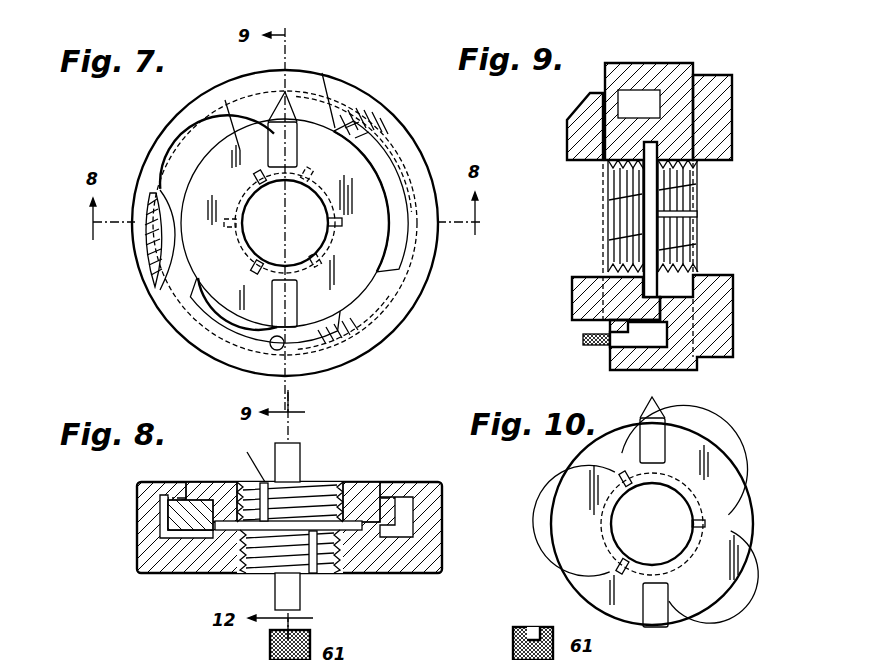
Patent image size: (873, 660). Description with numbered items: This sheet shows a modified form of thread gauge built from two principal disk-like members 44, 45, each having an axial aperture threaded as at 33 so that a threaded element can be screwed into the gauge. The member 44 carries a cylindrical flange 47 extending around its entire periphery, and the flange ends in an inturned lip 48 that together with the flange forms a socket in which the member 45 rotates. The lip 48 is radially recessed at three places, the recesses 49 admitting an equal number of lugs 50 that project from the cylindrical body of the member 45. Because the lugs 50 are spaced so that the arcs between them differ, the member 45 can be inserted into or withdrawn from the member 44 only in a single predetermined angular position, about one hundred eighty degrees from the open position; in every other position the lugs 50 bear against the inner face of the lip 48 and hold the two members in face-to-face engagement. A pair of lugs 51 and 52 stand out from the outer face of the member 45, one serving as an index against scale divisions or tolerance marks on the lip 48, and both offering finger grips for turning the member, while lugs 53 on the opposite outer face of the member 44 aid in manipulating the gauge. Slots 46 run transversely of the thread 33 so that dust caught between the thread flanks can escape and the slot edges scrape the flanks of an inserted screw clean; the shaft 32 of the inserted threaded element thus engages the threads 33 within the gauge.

In FIG. 7, the shaft 32 is at (300, 230).
In FIG. 10, the shaft 32 is at (675, 503).
In FIG. 7, the threads 33 is at (252, 187).
In FIG. 9, the threads 33 is at (615, 218).
In FIG. 8, the threads 33 is at (315, 488).
In FIG. 10, the threads 33 is at (652, 567).
In FIG. 7, the gauge member 44 is at (360, 97).
In FIG. 9, the gauge member 44 is at (672, 148).
In FIG. 8, the gauge member 44 is at (205, 555).
In FIG. 7, the gauge member 45 is at (343, 148).
In FIG. 9, the gauge member 45 is at (628, 148).
In FIG. 8, the gauge member 45 is at (208, 490).
In FIG. 10, the gauge member 45 is at (737, 497).
In FIG. 7, the slots 46 is at (328, 222).
In FIG. 9, the slots 46 is at (697, 214).
In FIG. 8, the slots 46 is at (350, 588).
In FIG. 10, the slots 46 is at (694, 522).
In FIG. 7, the cylindrical flange 47 is at (422, 158).
In FIG. 9, the cylindrical flange 47 is at (645, 73).
In FIG. 8, the cylindrical flange 47 is at (150, 510).
In FIG. 7, the inturned lip 48 is at (317, 323).
In FIG. 8, the inturned lip 48 is at (180, 497).
In FIG. 7, the recesses 49 is at (205, 135).
In FIG. 7, the lugs 50 is at (173, 207).
In FIG. 10, the lugs 50 is at (718, 425).
In FIG. 7, the lug 51 is at (287, 290).
In FIG. 9, the lug 51 is at (585, 297).
In FIG. 7, the lug 52 is at (288, 133).
In FIG. 9, the lug 52 is at (575, 135).
In FIG. 8, the lug 52 is at (297, 452).
In FIG. 10, the lug 52 is at (650, 433).
In FIG. 9, the lugs 53 is at (722, 113).
In FIG. 8, the lugs 53 is at (292, 595).
In FIG. 10, the lugs 53 is at (658, 608).